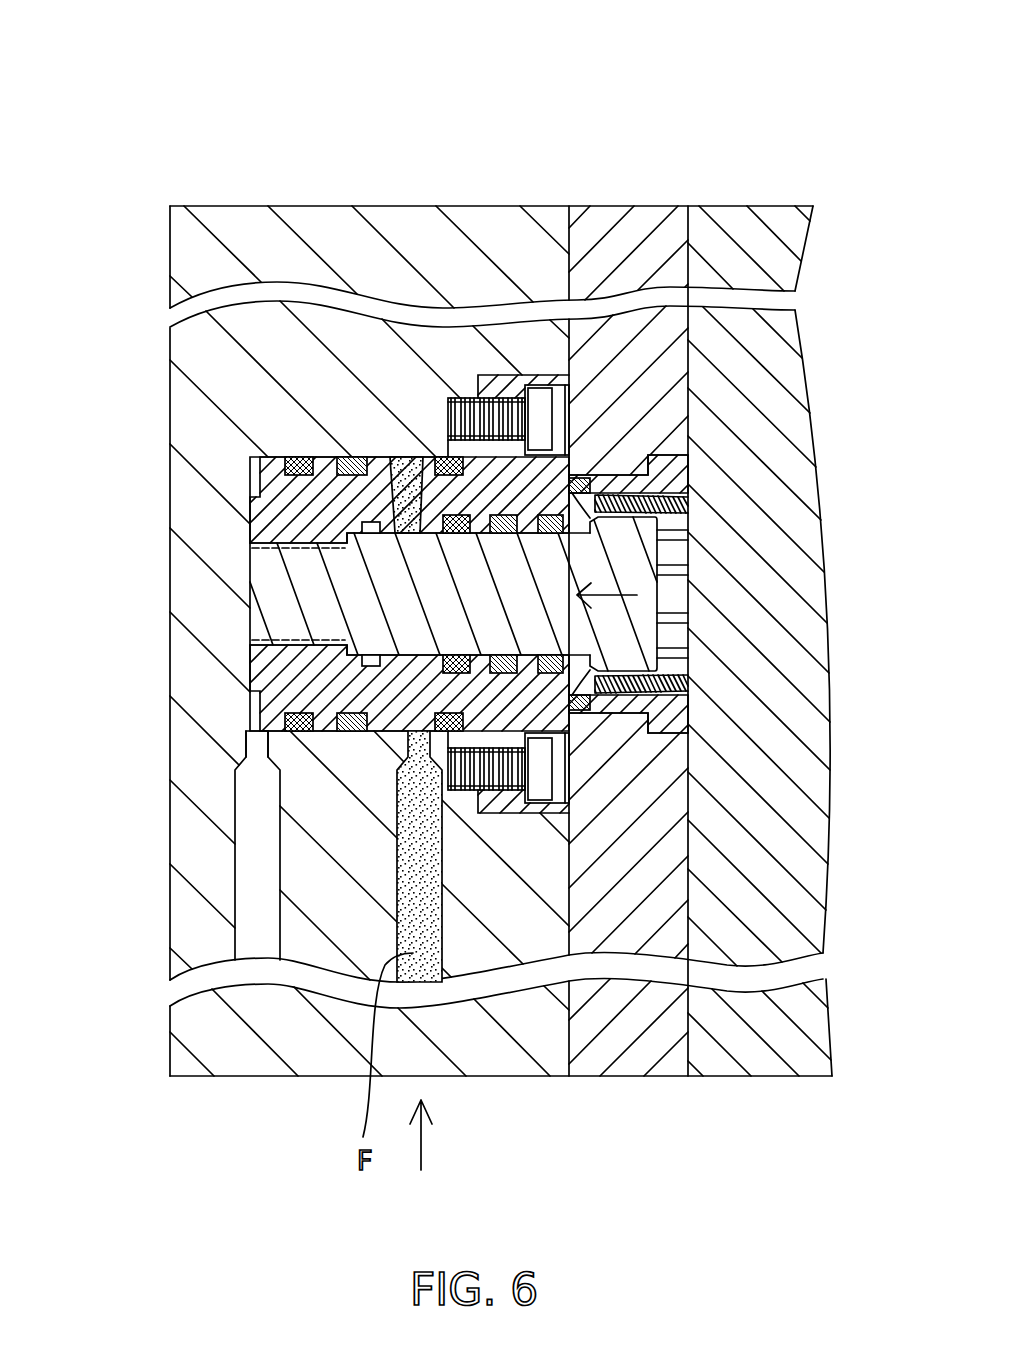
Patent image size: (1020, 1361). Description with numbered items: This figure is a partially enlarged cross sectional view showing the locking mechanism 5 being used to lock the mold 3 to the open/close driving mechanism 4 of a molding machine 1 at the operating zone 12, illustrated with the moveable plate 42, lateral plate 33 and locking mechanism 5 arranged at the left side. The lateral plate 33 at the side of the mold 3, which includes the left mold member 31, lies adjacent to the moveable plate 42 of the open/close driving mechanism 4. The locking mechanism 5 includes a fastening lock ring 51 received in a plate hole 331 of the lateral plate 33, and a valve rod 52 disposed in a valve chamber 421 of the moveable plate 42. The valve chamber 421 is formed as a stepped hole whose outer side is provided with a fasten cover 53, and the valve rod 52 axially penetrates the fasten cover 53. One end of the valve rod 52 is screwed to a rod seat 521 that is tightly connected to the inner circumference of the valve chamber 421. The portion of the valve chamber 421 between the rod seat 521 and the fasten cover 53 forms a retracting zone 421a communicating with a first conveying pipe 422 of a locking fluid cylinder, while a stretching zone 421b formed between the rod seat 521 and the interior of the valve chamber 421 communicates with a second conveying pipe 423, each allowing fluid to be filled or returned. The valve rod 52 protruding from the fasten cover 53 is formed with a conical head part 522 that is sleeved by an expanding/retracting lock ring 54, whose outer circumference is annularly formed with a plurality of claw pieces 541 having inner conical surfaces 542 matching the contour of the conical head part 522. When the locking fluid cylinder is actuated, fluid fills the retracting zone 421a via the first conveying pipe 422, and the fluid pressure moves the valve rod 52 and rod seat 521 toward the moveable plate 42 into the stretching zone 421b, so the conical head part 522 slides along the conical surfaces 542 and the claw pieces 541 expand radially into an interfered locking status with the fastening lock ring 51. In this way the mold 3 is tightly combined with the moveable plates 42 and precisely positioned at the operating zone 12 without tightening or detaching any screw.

The molding machine 1 is at (480, 621).
The operating zone 12 is at (799, 88).
The mold 3 is at (735, 577).
The left mold member 31 is at (745, 222).
The lateral plate 33 is at (622, 232).
The plate hole 331 is at (622, 468).
The open/close driving mechanism 4 is at (305, 627).
The moveable plate 42 is at (205, 358).
The valve chamber 421 is at (298, 456).
The retracting zone 421a is at (402, 452).
The stretching zone 421b is at (245, 712).
The first conveying pipe 422 is at (392, 898).
The second conveying pipe 423 is at (237, 906).
The locking mechanism 5 is at (498, 594).
The fastening lock ring 51 is at (688, 470).
The valve rod 52 is at (290, 613).
The rod seat 521 is at (293, 505).
The conical head part 522 is at (620, 557).
The fasten cover 53 is at (545, 722).
The expanding/retracting lock ring 54 is at (683, 505).
The claw pieces 541 is at (683, 682).
The conical surface 542 is at (640, 660).